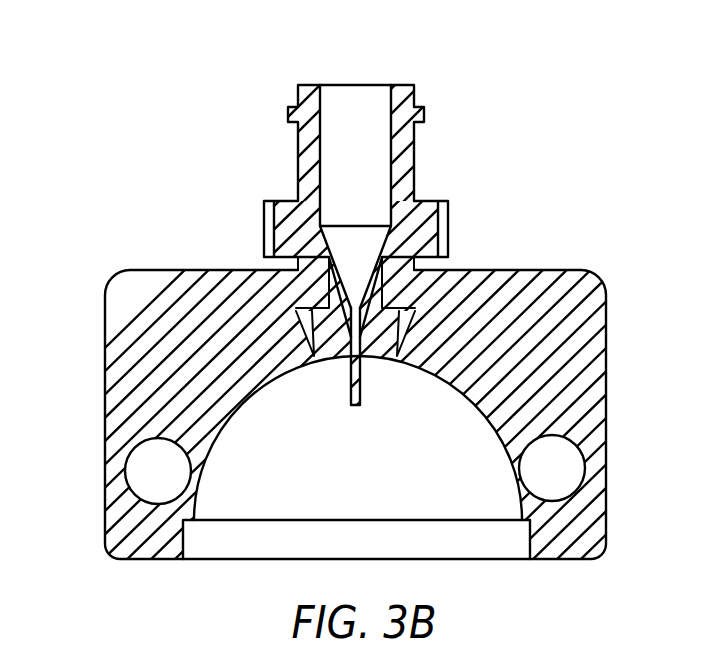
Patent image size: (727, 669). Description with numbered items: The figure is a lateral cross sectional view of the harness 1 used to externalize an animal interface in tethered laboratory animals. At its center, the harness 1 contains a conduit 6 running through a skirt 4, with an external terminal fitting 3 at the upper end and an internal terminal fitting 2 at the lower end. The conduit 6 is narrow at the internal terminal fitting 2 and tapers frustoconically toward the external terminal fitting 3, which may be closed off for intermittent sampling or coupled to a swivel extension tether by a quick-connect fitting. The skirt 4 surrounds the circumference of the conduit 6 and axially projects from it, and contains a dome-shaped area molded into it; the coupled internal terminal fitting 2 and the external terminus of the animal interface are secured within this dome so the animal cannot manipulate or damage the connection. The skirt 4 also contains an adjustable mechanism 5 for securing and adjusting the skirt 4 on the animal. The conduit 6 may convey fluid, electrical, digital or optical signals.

The harness 1 is at (108, 188).
The internal terminal fitting 2 is at (362, 402).
The external terminal fitting 3 is at (372, 85).
The skirt 4 is at (606, 347).
The adjustable mechanism 5 is at (157, 482).
The conduit 6 is at (369, 196).